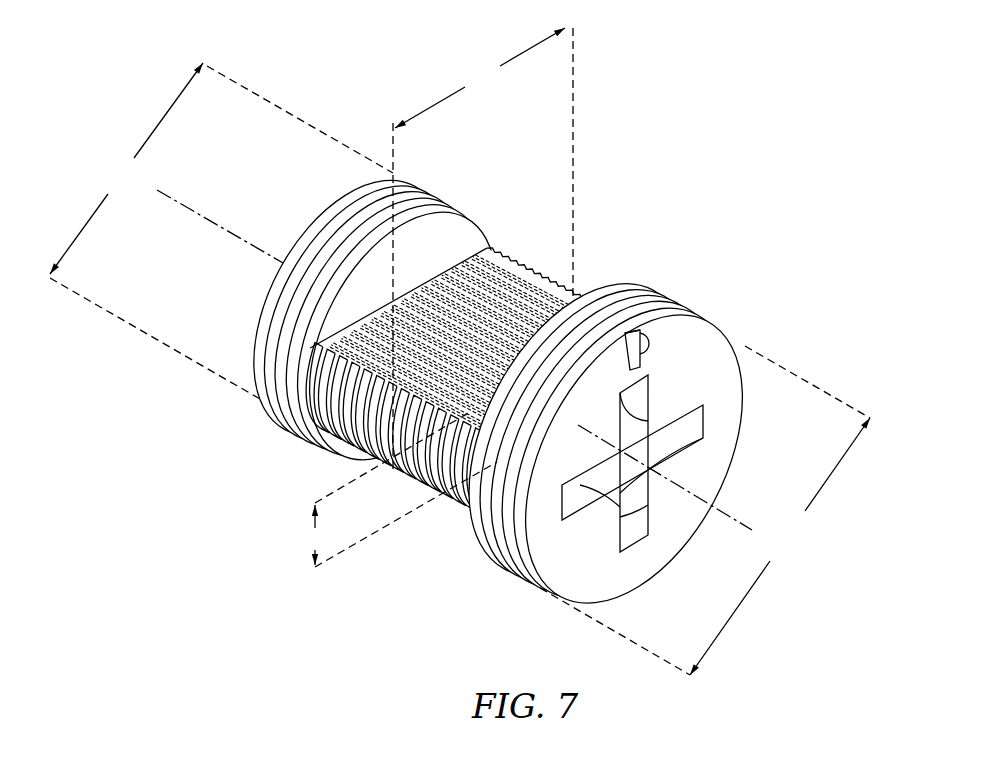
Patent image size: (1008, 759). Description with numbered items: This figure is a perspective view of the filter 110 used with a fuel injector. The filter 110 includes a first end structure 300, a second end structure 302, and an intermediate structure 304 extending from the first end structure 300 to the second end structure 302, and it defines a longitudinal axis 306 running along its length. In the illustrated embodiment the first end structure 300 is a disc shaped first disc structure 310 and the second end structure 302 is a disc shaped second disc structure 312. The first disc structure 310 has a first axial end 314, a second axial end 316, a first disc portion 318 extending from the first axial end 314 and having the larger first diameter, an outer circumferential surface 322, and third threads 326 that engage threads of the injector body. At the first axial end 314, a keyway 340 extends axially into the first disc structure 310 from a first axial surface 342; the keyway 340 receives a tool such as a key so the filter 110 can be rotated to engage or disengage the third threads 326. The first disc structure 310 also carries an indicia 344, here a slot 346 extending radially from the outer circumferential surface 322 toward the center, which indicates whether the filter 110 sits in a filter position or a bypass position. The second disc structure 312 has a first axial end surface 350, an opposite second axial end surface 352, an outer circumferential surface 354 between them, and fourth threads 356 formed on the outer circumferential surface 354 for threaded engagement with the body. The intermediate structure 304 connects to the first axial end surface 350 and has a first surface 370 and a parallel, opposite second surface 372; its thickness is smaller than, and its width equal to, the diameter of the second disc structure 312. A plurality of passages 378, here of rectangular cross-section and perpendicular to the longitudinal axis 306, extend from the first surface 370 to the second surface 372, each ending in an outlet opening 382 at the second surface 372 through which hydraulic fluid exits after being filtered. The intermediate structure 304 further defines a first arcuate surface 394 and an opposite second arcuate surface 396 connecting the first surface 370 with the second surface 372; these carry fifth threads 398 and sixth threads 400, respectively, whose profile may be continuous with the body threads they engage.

The filter 110 is at (464, 380).
The first end structure 300 is at (497, 387).
The second end structure 302 is at (418, 327).
The intermediate structure 304 is at (553, 283).
The longitudinal axis 306 is at (745, 523).
The first disc structure 310 is at (625, 445).
The second disc structure 312 is at (377, 185).
The first axial end 314 is at (540, 587).
The second axial end 316 is at (473, 517).
The first disc portion 318 is at (498, 548).
The outer circumferential surface 322 is at (647, 353).
The third threads 326 is at (697, 310).
The keyway 340 is at (655, 452).
The first axial surface 342 is at (650, 565).
The indicia 344 is at (660, 313).
The slot 346 is at (638, 303).
The first axial end surface 350 is at (339, 267).
The second axial end surface 352 is at (270, 278).
The outer circumferential surface 354 is at (327, 240).
The fourth threads 356 is at (350, 210).
The first surface 370 is at (338, 436).
The second surface 372 is at (506, 291).
The passages 378 is at (460, 297).
The outlet opening 382 is at (330, 380).
The first arcuate surface 394 is at (347, 407).
The second arcuate surface 396 is at (590, 300).
The fifth threads 398 is at (327, 390).
The sixth threads 400 is at (533, 280).